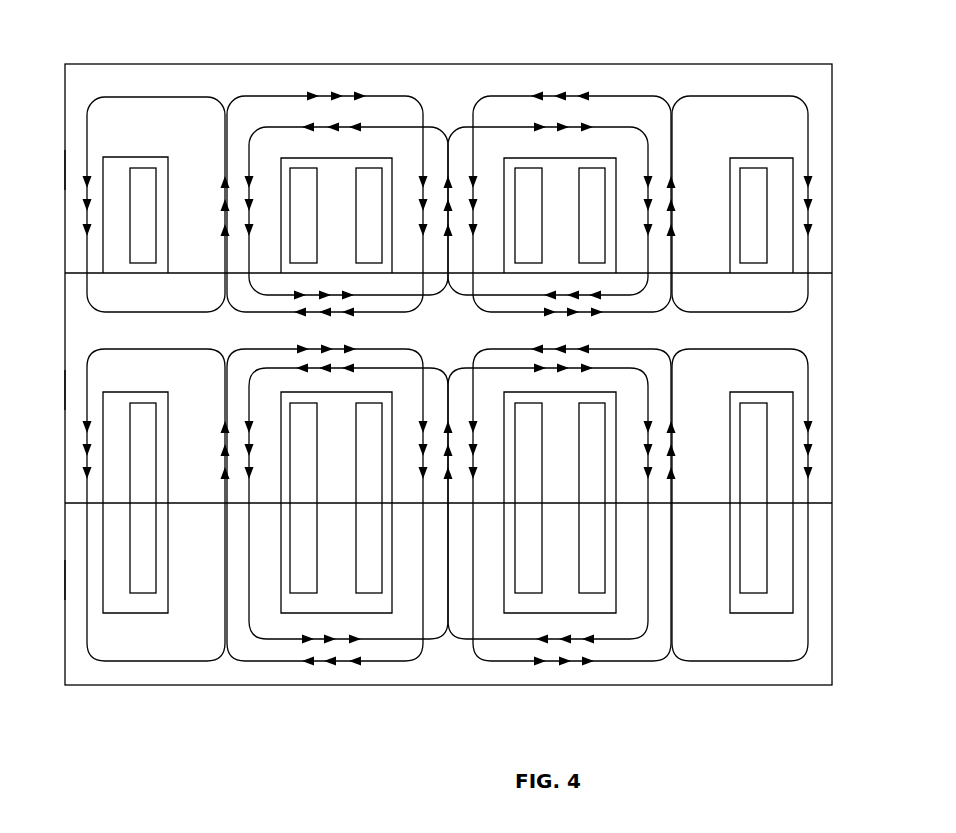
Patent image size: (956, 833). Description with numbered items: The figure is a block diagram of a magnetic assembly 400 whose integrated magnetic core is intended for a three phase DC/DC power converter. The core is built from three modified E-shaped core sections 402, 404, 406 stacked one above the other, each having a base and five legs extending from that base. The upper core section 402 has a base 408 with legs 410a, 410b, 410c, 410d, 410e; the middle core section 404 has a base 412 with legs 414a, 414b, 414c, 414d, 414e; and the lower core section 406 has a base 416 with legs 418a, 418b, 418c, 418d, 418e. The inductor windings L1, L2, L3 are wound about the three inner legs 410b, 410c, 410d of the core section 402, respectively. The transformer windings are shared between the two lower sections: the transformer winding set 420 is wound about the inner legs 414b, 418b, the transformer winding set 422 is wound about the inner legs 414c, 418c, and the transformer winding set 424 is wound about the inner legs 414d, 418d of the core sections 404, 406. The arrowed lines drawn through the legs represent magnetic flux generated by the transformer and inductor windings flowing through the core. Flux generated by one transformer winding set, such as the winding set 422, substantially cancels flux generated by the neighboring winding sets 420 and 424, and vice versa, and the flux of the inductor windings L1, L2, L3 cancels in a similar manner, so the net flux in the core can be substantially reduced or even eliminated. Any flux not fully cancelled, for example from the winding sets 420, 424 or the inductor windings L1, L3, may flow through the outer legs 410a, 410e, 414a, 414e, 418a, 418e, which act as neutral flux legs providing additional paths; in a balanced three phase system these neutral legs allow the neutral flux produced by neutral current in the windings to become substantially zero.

The magnetic assembly 400 is at (106, 50).
The core section 402 is at (846, 158).
The core section 404 is at (846, 343).
The core section 406 is at (844, 594).
The base 408 is at (467, 96).
The outer leg 410a is at (75, 167).
The inner leg 410b is at (200, 180).
The inner leg 410c is at (412, 165).
The inner leg 410d is at (698, 165).
The outer leg 410e is at (820, 188).
The base 412 is at (467, 342).
The outer leg 414a is at (75, 385).
The inner leg 414b is at (200, 430).
The inner leg 414c is at (410, 405).
The inner leg 414d is at (695, 405).
The outer leg 414e is at (822, 385).
The base 416 is at (467, 667).
The outer leg 418a is at (75, 580).
The inner leg 418b is at (205, 580).
The inner leg 418c is at (412, 580).
The inner leg 418d is at (688, 578).
The outer leg 418e is at (825, 538).
The transformer winding set 420 is at (300, 425).
The transformer winding set 422 is at (367, 580).
The transformer winding set 424 is at (592, 578).
The inductor winding L1 is at (144, 176).
The inductor winding L2 is at (366, 175).
The inductor winding L3 is at (591, 175).